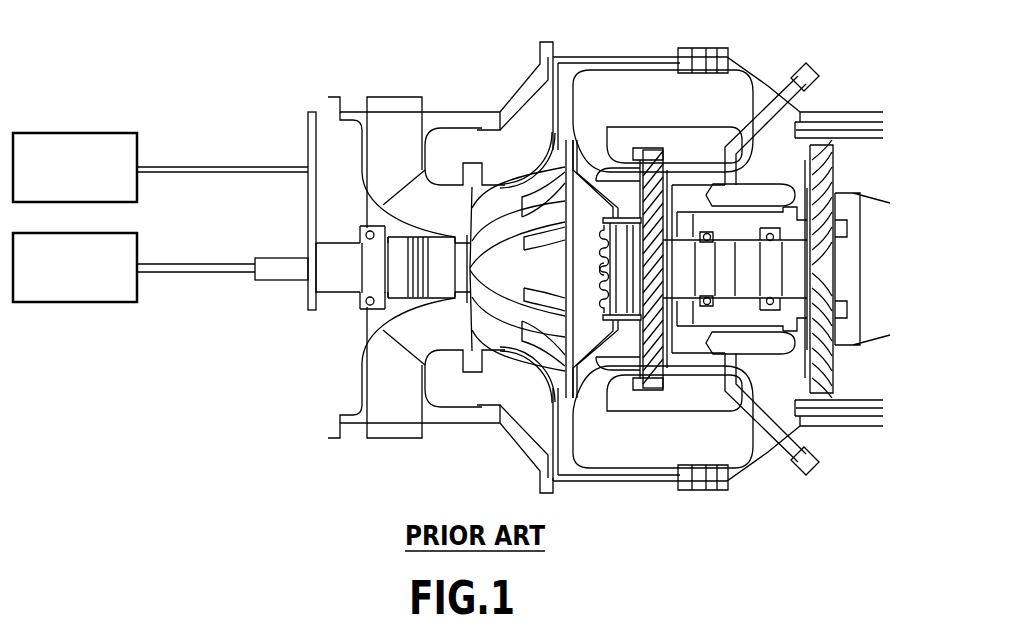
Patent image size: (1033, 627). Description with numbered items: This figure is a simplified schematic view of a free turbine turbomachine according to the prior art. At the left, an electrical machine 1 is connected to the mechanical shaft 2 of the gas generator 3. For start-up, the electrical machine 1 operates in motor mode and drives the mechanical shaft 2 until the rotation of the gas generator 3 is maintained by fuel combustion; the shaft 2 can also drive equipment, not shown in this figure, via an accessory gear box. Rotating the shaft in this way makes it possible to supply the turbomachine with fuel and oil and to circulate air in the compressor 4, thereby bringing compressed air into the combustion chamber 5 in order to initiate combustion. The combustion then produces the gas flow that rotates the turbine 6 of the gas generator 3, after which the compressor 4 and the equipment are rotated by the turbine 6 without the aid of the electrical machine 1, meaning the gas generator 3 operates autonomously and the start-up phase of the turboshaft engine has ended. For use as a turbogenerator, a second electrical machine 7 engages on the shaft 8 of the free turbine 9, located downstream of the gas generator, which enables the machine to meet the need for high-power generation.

The electrical machine 1 is at (67, 176).
The mechanical shaft 2 is at (333, 288).
The gas generator 3 is at (549, 407).
The compressor 4 is at (507, 198).
The combustion chamber 5 is at (720, 95).
The turbine 6 is at (655, 150).
The second electrical machine 7 is at (67, 276).
The shaft 8 is at (282, 264).
The free turbine 9 is at (842, 373).